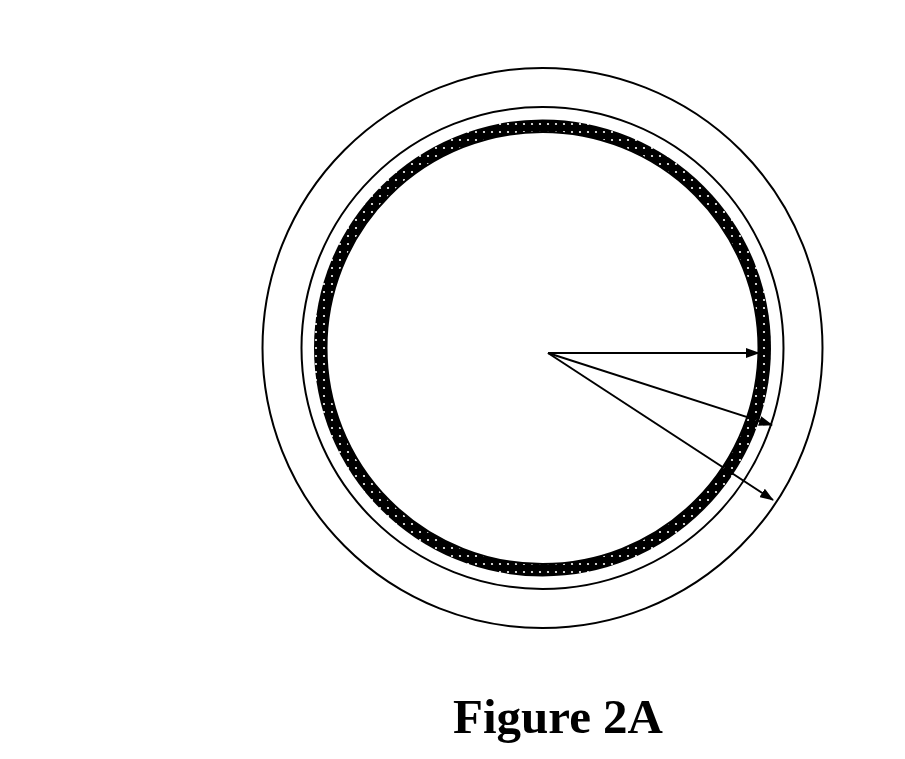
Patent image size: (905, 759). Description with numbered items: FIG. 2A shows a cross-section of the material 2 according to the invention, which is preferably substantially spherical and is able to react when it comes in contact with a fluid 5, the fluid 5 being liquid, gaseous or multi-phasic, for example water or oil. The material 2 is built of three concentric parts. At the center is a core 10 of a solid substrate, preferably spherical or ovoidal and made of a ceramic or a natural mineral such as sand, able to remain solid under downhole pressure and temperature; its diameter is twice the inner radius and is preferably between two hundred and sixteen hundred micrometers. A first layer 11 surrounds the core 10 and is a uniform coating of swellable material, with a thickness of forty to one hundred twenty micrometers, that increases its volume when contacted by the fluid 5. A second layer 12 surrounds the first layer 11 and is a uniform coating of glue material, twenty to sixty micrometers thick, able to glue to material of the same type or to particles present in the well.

The material 2 is at (794, 20).
The fluid 5 is at (280, 33).
The core 10 is at (546, 259).
The first layer 11 is at (310, 342).
The second layer 12 is at (298, 255).